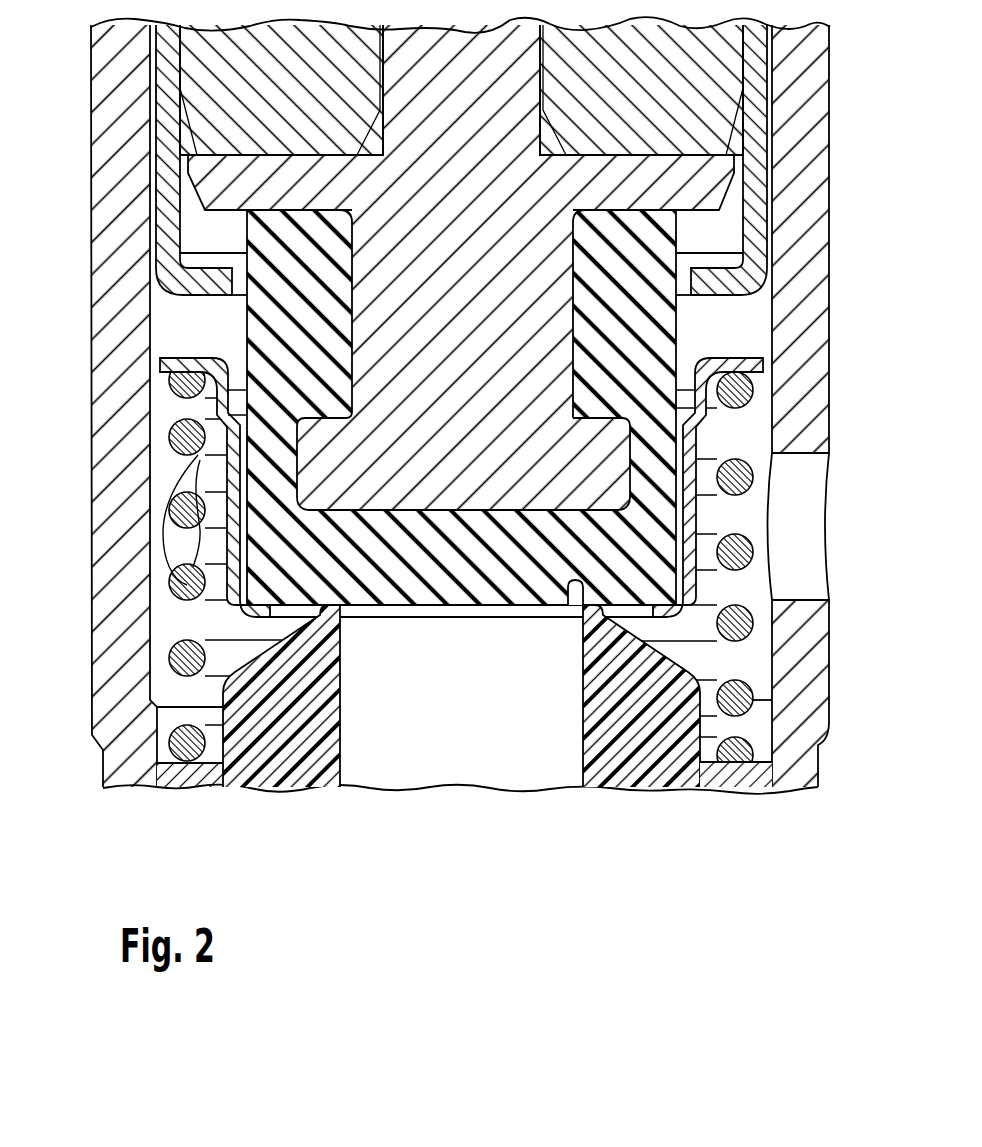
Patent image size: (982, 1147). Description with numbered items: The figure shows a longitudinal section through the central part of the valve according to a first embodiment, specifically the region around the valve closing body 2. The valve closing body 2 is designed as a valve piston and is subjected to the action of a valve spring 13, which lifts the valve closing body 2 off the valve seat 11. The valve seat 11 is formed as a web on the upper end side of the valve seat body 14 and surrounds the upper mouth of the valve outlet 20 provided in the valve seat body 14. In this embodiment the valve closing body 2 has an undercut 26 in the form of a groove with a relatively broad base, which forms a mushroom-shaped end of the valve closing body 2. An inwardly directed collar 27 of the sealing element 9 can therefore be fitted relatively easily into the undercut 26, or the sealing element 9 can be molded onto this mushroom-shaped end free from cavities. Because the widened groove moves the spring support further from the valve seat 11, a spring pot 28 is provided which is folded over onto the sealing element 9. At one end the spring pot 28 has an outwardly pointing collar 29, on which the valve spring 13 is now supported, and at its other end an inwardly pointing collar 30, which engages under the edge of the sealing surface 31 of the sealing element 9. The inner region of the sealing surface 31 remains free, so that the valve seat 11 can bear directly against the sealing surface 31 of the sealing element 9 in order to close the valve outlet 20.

The valve closing body 2 is at (313, 470).
The sealing element 9 is at (396, 573).
The valve seat 11 is at (573, 584).
The valve spring 13 is at (739, 551).
The valve seat body 14 is at (645, 745).
The valve outlet 20 is at (343, 717).
The undercut 26 is at (573, 335).
The inwardly directed collar 27 is at (645, 230).
The spring pot 28 is at (222, 550).
The outwardly pointing collar 29 is at (173, 365).
The inwardly pointing collar 30 is at (323, 612).
The sealing surface 31 is at (463, 606).